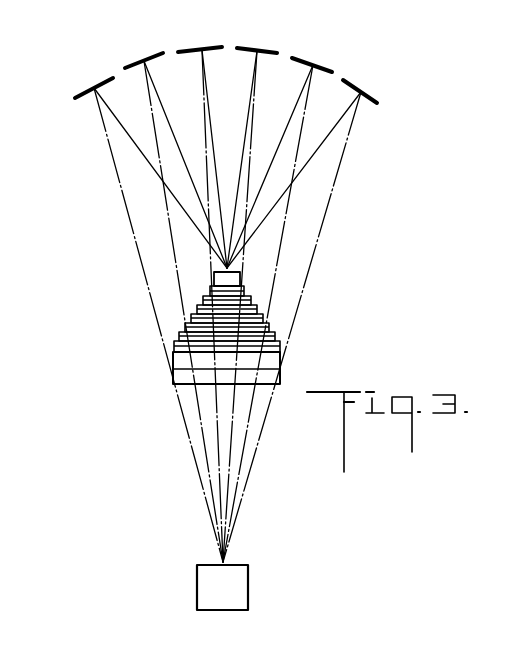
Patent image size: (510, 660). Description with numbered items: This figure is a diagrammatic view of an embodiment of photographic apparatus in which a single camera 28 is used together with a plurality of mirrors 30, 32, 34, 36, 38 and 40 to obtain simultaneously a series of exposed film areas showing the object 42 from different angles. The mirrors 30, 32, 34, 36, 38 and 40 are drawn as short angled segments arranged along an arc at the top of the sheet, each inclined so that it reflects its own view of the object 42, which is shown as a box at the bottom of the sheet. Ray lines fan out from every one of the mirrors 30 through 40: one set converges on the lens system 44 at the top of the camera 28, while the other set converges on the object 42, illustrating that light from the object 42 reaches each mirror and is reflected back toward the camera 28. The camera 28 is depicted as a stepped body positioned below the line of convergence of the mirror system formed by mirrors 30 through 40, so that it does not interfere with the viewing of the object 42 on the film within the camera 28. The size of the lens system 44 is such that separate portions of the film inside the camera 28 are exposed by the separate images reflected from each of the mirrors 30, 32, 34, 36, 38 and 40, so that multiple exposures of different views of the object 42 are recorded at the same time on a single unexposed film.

The camera 28 is at (177, 375).
The mirror 30 is at (83, 90).
The mirror 32 is at (143, 62).
The mirror 34 is at (208, 50).
The mirror 36 is at (258, 50).
The mirror 38 is at (318, 67).
The mirror 40 is at (363, 98).
The object 42 is at (217, 580).
The lens system 44 is at (213, 276).